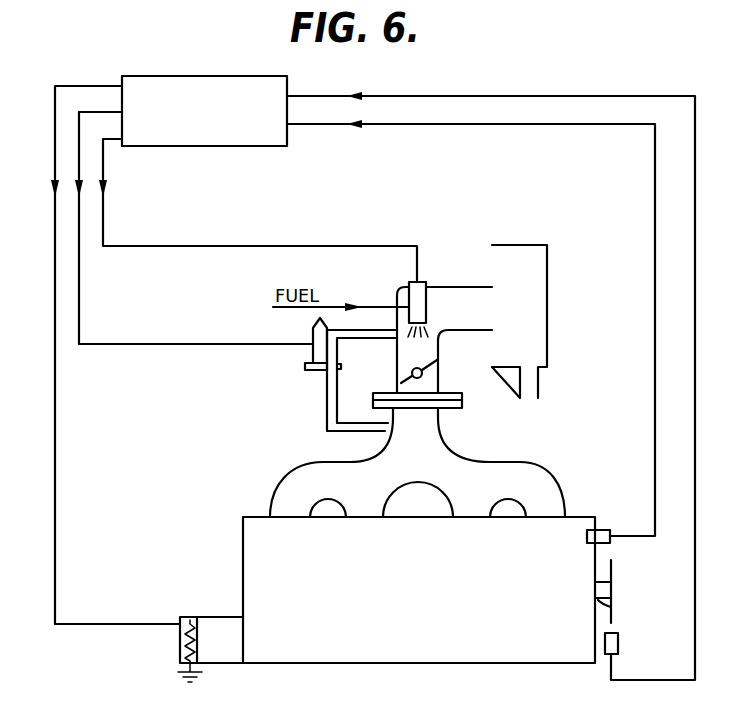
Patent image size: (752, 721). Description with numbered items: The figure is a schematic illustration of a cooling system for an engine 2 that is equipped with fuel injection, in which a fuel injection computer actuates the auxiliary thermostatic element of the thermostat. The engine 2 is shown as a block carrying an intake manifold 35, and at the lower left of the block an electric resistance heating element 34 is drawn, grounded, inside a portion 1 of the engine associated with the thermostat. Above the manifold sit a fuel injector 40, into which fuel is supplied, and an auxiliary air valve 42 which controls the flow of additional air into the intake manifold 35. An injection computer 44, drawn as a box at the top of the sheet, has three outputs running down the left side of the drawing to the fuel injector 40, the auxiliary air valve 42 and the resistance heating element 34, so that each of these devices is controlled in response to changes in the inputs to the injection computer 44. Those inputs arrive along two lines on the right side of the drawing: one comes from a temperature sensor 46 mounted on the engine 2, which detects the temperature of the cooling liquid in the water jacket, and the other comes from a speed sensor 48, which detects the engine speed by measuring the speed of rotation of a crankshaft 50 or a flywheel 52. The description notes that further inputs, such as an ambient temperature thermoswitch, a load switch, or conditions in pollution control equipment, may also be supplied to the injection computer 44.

The engine block portion (coolant passage) 1 is at (223, 625).
The engine 2 is at (253, 538).
The electric resistance heating element 34 is at (180, 646).
The intake manifold 35 is at (505, 472).
The fuel injector 40 is at (427, 283).
The auxiliary air valve 42 is at (313, 356).
The injection computer 44 is at (250, 137).
The temperature sensor 46 is at (587, 537).
The speed sensor 48 is at (620, 645).
The crankshaft 50 is at (598, 600).
The flywheel 52 is at (617, 568).